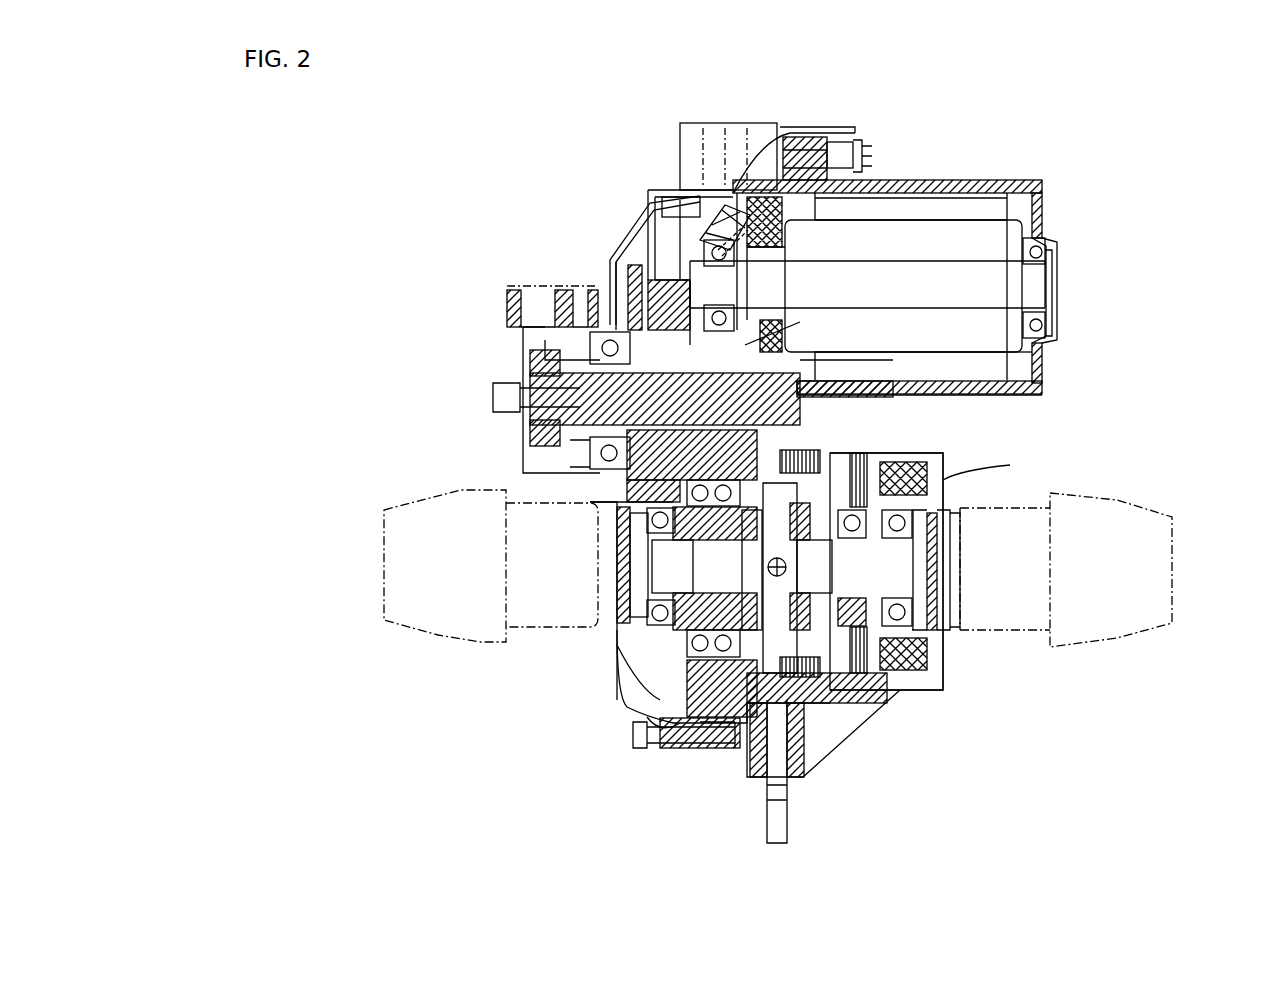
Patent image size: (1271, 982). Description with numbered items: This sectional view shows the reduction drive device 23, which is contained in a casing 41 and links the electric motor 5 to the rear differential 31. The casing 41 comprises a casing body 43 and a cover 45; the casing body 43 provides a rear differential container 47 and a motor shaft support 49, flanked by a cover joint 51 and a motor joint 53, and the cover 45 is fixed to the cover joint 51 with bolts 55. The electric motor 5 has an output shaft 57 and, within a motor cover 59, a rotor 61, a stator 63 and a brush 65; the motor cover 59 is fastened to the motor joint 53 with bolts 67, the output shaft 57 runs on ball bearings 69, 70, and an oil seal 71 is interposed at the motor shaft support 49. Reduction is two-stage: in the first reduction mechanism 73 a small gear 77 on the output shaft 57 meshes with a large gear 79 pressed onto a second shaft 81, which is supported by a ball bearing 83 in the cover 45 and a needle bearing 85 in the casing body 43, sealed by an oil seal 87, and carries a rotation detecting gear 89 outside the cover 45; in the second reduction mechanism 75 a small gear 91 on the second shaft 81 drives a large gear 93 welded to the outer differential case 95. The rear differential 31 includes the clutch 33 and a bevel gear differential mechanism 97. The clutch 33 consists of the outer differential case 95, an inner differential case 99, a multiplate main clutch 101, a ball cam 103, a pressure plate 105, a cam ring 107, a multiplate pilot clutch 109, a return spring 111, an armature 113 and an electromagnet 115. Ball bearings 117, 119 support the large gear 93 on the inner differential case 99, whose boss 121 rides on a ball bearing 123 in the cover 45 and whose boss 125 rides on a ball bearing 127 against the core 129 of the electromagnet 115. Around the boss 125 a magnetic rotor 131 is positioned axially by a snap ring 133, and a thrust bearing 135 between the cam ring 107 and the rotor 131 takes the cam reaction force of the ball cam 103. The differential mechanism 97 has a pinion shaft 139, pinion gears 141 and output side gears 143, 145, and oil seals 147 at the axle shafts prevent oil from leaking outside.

The electric motor 5 is at (1060, 250).
The reduction drive device 23 is at (1040, 178).
The rear differential 31 is at (790, 740).
The clutch 33 is at (810, 700).
The casing 41 is at (650, 185).
The casing body 43 is at (715, 215).
The cover 45 is at (628, 262).
The rear differential container 47 is at (800, 680).
The motor shaft support 49 is at (732, 245).
The cover joint 51 is at (712, 240).
The motor joint 53 is at (770, 225).
The bolts 55 is at (630, 735).
The output shaft 57 is at (1035, 285).
The motor cover 59 is at (950, 180).
The rotor 61 is at (965, 240).
The stator 63 is at (1000, 205).
The brush 65 is at (795, 200).
The bolts 67 is at (872, 150).
The ball bearing 69 is at (1046, 246).
The ball bearing 70 is at (718, 240).
The oil seal 71 is at (682, 220).
The first reduction mechanism 73 is at (640, 265).
The second reduction mechanism 75 is at (1000, 390).
The small gear 77 is at (630, 225).
The large gear 79 is at (633, 290).
The second shaft 81 is at (610, 400).
The ball bearing 83 is at (575, 290).
The needle bearing 85 is at (920, 395).
The oil seal 87 is at (585, 455).
The rotation detecting gear 89 is at (522, 345).
The small gear 91 is at (1010, 362).
The large gear 93 is at (770, 314).
The outer differential case 95 is at (800, 322).
The bevel gear differential mechanism 97 is at (850, 690).
The inner differential case 99 is at (506, 503).
The multiplate main clutch 101 is at (812, 705).
The ball cam 103 is at (950, 580).
The pressure plate 105 is at (955, 470).
The cam ring 107 is at (950, 560).
The multiplate pilot clutch 109 is at (945, 520).
The return spring 111 is at (950, 600).
The armature 113 is at (860, 690).
The electromagnet 115 is at (925, 690).
The ball bearing 117 is at (685, 700).
The ball bearing 119 is at (715, 660).
The boss 121 is at (640, 600).
The ball bearing 123 is at (640, 645).
The boss 125 is at (965, 620).
The ball bearing 127 is at (945, 655).
The core 129 is at (945, 645).
The rotor 131 is at (905, 685).
The snap ring 133 is at (1060, 630).
The thrust bearing 135 is at (950, 548).
The pinion shaft 139 is at (750, 680).
The pinion gears 141 is at (660, 710).
The output side gear 143 is at (760, 730).
The output side gear 145 is at (870, 695).
The oil seals 147 is at (620, 625).